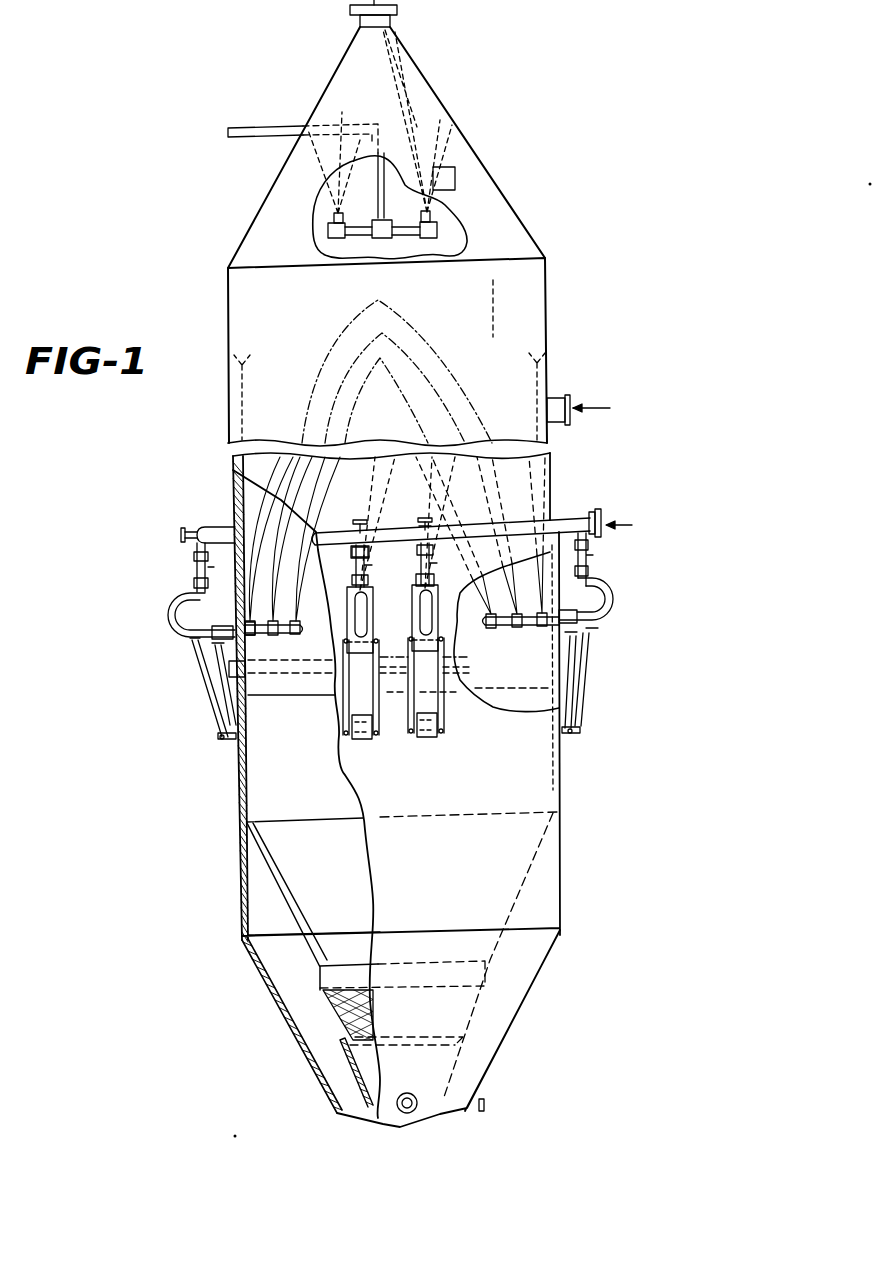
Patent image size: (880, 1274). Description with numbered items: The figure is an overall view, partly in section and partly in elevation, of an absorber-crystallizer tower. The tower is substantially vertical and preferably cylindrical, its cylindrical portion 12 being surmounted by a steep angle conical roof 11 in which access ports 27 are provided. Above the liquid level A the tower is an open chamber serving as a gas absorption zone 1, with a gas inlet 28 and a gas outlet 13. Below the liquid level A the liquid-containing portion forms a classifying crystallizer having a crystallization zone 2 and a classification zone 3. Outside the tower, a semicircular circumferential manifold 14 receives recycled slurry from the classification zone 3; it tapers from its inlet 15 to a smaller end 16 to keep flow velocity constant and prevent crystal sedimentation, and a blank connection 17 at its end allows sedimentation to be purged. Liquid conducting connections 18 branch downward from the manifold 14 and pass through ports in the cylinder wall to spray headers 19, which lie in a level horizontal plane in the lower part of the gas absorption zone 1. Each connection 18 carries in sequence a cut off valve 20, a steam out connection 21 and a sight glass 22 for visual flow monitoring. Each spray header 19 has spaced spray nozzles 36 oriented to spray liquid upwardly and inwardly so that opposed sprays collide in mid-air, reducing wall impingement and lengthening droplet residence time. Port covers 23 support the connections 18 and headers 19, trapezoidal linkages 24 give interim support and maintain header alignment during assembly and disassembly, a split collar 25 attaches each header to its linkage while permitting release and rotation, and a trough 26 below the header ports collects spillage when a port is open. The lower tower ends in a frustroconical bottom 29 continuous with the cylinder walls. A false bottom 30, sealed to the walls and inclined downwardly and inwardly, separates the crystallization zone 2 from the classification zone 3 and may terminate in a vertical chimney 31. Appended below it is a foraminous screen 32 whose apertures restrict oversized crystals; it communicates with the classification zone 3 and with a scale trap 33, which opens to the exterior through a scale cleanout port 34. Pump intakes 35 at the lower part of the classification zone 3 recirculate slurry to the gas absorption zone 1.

The gas absorption zone 1 is at (396, 402).
The crystallization zone 2 is at (448, 852).
The classification zone 3 is at (277, 952).
The conical roof 11 is at (458, 127).
The cylindrical portion 12 is at (547, 316).
The gas outlet 13 is at (392, 20).
The circumferential manifold 14 is at (575, 518).
The inlet 15 is at (600, 513).
The smaller end 16 is at (415, 531).
The blank connection 17 is at (423, 520).
The liquid conducting connection 18 is at (370, 558).
The spray header 19 is at (277, 636).
The cut off valve 20 is at (430, 527).
The steam out connection 21 is at (443, 588).
The sight glass 22 is at (418, 579).
The port cover 23 is at (452, 630).
The trapezoidal linkage 24 is at (585, 691).
The split collar 25 is at (612, 610).
The trough 26 is at (452, 680).
The access port 27 is at (455, 180).
The gas inlet 28 is at (567, 396).
The frustroconical bottom 29 is at (530, 1001).
The false bottom 30 is at (280, 866).
The vertical chimney 31 is at (285, 975).
The foraminous screen 32 is at (330, 1005).
The scale trap 33 is at (345, 1067).
The scale cleanout port 34 is at (408, 1092).
The pump intake 35 is at (486, 1104).
The spray nozzle 36 is at (299, 636).
The liquid level A is at (512, 690).